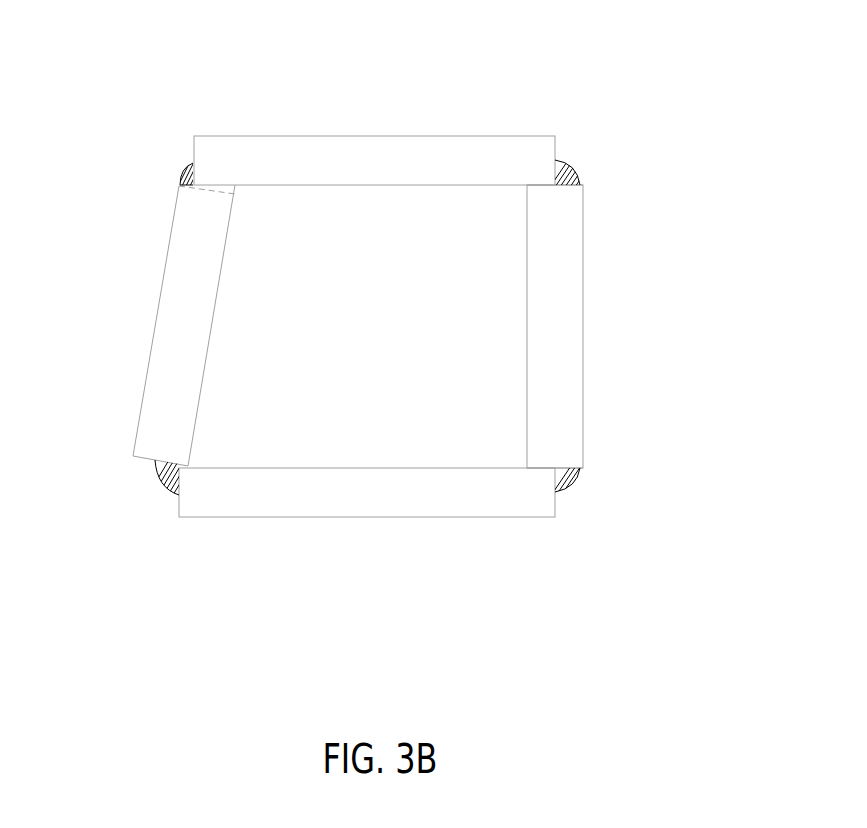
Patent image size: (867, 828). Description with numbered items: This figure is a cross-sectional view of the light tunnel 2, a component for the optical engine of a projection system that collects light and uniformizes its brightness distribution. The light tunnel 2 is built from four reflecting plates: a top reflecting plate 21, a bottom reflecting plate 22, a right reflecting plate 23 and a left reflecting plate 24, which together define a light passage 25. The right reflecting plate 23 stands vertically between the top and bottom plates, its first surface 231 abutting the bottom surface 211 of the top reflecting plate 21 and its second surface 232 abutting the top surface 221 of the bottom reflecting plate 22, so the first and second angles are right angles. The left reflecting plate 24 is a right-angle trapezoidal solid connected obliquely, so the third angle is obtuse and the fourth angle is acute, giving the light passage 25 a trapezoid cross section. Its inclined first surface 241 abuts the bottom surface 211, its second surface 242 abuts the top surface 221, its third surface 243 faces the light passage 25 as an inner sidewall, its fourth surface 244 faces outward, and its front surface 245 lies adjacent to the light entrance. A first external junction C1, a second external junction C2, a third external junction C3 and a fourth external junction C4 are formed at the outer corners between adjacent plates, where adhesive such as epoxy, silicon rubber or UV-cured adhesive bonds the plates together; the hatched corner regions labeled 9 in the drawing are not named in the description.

The light tunnel 2 is at (111, 35).
The top reflecting plate 21 is at (437, 157).
The bottom surface of the top reflecting plate 211 is at (375, 185).
The bottom reflecting plate 22 is at (382, 488).
The top surface of the bottom reflecting plate 221 is at (337, 468).
The right reflecting plate 23 is at (563, 315).
The first surface of the right reflecting plate 231 is at (578, 185).
The second surface of the right reflecting plate 232 is at (583, 470).
The left reflecting plate 24 is at (188, 312).
The first surface of the left reflecting plate 241 is at (180, 183).
The second surface of the left reflecting plate 242 is at (150, 465).
The third surface of the left reflecting plate 243 is at (208, 352).
The fourth surface of the left reflecting plate 244 is at (150, 353).
The front surface of the left reflecting plate 245 is at (167, 410).
The light passage 25 is at (438, 418).
The filler / sealing material at corners 9 is at (583, 184).
The first external junction C1 is at (182, 158).
The second external junction C2 is at (568, 162).
The third external junction C3 is at (138, 470).
The fourth external junction C4 is at (582, 472).